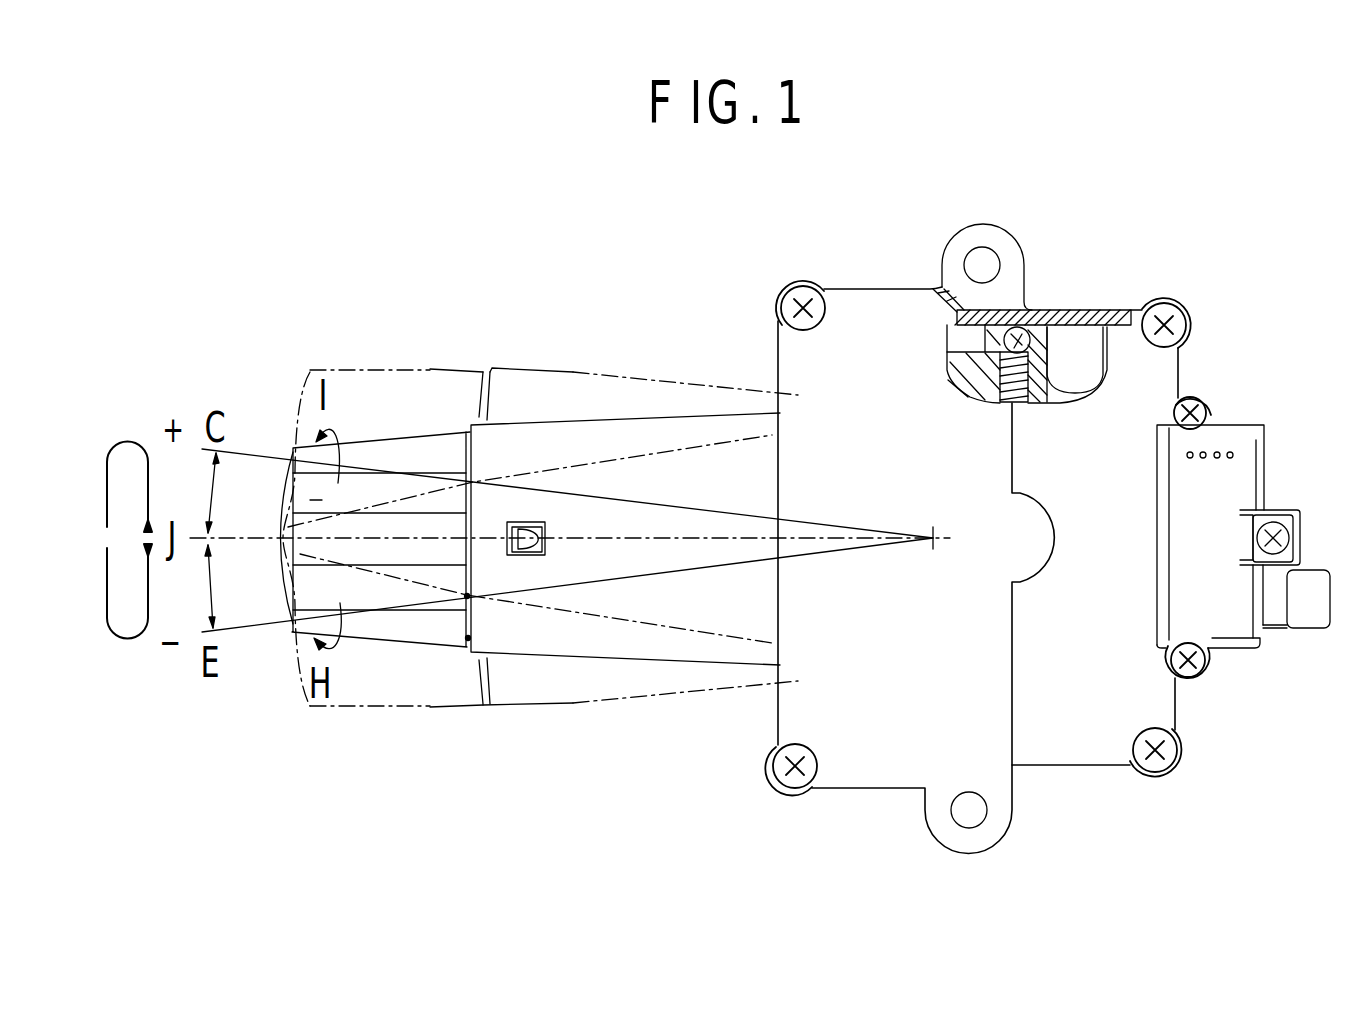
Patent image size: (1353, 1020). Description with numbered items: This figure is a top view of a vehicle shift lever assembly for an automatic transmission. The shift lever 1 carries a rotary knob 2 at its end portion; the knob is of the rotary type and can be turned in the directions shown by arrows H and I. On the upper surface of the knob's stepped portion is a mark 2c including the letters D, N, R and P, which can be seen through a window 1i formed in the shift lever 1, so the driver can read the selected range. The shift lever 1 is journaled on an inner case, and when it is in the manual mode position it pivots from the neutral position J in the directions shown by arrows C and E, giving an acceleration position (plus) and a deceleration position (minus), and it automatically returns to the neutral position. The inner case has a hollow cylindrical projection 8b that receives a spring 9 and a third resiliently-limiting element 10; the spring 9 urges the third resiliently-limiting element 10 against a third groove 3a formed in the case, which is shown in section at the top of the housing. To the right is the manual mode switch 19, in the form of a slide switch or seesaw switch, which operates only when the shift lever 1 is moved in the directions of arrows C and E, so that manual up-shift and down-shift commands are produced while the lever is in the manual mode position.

The shift lever 1 is at (619, 413).
The rotary knob 2 is at (385, 437).
The mark 2c is at (466, 598).
The window 1i is at (533, 557).
The third groove 3a is at (1032, 312).
The hollow cylindrical projection 8b is at (1067, 312).
The spring 9 is at (970, 312).
The third resiliently-limiting element 10 is at (1043, 312).
The manual mode switch 19 is at (1230, 600).